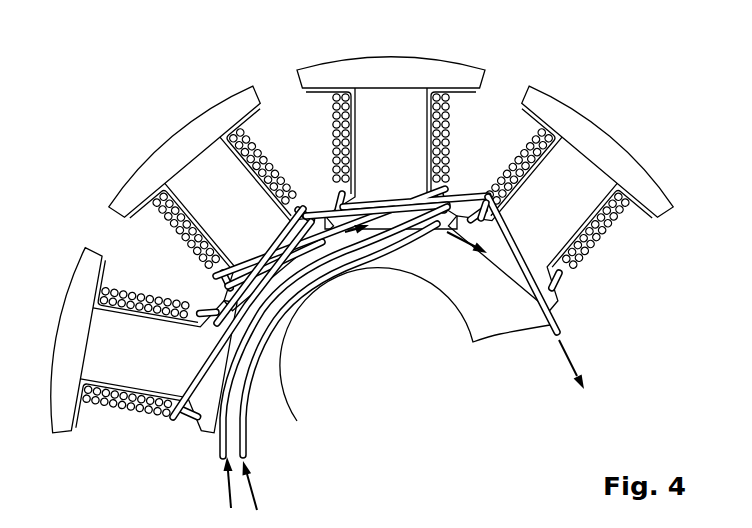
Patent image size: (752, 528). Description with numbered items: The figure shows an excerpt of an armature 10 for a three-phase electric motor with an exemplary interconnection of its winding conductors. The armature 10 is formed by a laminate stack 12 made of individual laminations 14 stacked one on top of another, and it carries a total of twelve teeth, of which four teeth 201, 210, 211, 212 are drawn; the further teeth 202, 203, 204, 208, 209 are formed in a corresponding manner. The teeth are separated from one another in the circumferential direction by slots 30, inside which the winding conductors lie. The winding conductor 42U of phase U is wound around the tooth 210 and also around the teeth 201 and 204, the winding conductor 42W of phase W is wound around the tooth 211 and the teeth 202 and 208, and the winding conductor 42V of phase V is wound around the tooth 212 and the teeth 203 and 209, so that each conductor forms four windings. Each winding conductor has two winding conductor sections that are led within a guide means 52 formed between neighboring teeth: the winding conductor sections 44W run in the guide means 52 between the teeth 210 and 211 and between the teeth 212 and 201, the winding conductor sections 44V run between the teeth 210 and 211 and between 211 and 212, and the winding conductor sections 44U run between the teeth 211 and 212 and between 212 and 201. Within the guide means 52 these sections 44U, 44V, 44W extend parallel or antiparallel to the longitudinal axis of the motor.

The armature 10 is at (633, 68).
The laminate stack 12 is at (555, 93).
The individual laminations 14 is at (657, 141).
The slots 30 is at (325, 131).
The guide means 52 is at (328, 199).
The tooth 201 is at (571, 184).
The tooth 210 is at (153, 371).
The tooth 211 is at (240, 211).
The tooth 212 is at (391, 143).
The tooth 202 is at (323, 242).
The tooth 203 is at (460, 245).
The tooth 204 is at (573, 354).
The tooth 208 is at (253, 492).
The tooth 209 is at (228, 491).
The winding conductor of phase U 42U is at (200, 381).
The winding conductor of phase V 42V is at (218, 446).
The winding conductor of phase W 42W is at (241, 446).
The winding conductor sections of phase U 44U is at (305, 228).
The winding conductor sections of phase V 44V is at (368, 200).
The winding conductor sections of phase W 44W is at (295, 306).